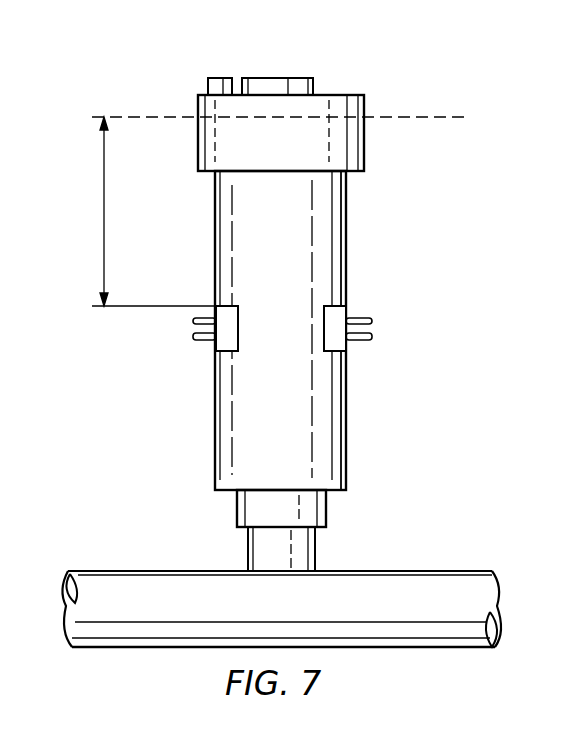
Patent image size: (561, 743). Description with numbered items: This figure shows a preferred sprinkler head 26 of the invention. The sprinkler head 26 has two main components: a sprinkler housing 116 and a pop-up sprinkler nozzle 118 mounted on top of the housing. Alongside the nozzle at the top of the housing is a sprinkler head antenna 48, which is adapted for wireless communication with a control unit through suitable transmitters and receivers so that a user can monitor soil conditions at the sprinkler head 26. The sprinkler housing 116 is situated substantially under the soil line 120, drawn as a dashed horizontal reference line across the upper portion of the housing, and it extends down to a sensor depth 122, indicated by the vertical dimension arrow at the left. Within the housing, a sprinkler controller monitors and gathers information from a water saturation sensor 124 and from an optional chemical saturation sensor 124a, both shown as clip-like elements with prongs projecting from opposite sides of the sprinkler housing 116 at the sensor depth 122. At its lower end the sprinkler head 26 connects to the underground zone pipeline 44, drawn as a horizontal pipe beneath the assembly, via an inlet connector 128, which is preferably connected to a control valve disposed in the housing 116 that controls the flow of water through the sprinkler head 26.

The sprinkler head 26 is at (339, 62).
The sprinkler head antenna 48 is at (215, 78).
The pop-up sprinkler nozzle 118 is at (278, 78).
The soil line 120 is at (427, 117).
The sensor depth 122 is at (104, 210).
The sprinkler housing 116 is at (346, 258).
The water saturation sensor 124 is at (200, 340).
The chemical saturation sensor 124a is at (358, 340).
The inlet connector 128 is at (326, 510).
The underground zone pipeline 44 is at (137, 571).